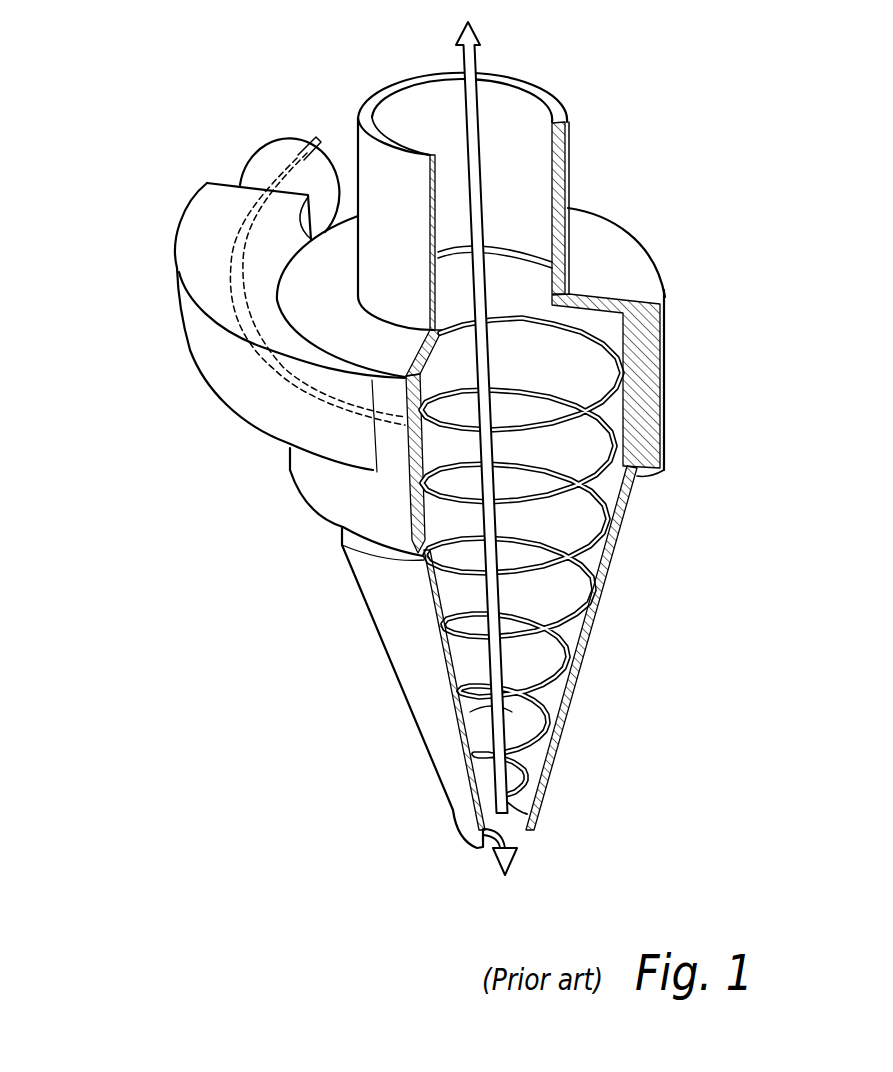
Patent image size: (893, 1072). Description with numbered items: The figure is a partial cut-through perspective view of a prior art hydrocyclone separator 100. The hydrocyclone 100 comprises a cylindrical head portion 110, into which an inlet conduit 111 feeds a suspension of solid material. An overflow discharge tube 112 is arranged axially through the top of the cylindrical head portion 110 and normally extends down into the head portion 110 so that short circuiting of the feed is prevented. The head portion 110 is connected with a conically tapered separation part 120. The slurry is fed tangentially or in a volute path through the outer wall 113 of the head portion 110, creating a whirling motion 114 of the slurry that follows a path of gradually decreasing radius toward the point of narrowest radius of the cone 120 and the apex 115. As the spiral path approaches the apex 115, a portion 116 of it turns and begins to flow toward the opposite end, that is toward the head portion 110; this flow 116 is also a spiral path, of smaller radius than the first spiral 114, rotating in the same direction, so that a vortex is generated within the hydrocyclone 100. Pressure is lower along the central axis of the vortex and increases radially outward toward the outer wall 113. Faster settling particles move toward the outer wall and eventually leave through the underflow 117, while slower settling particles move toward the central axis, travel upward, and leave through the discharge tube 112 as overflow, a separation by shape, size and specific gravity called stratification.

The hydrocyclone separator 100 is at (678, 72).
The cylindrical head portion 110 is at (636, 268).
The inlet conduit 111 is at (207, 237).
The overflow discharge tube 112 is at (569, 167).
The outer wall 113 is at (666, 358).
The whirling motion 114 is at (588, 565).
The apex 115 is at (538, 808).
The portion of flow 116 is at (492, 715).
The underflow 117 is at (517, 830).
The conically tapered separation part 120 is at (573, 680).